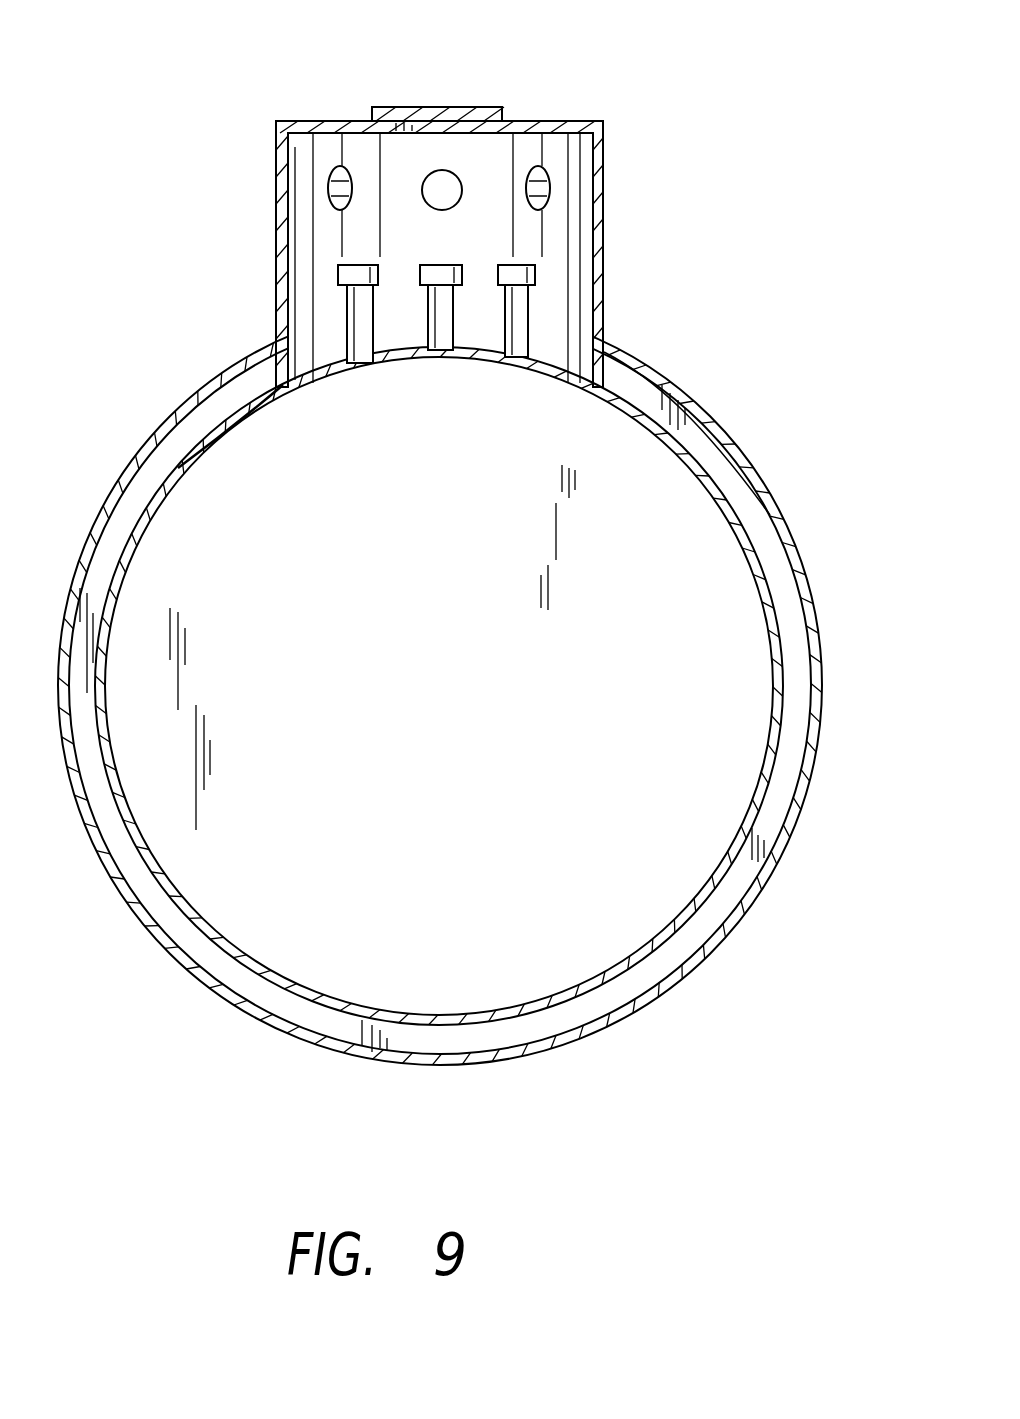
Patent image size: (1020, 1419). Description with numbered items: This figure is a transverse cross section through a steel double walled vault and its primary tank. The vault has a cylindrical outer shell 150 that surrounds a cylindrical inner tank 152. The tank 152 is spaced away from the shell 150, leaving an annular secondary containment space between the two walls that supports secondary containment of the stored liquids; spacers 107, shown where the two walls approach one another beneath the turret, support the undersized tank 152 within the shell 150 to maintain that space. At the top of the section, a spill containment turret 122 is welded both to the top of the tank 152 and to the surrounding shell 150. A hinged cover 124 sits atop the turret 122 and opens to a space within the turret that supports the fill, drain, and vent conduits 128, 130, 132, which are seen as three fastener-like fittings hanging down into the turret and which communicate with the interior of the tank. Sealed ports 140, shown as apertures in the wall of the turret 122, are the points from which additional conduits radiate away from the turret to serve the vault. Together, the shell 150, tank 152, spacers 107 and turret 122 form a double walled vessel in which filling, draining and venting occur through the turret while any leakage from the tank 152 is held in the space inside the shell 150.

The spacers 107 is at (277, 370).
The spill containment turret 122 is at (625, 121).
The hinged cover 124 is at (450, 108).
The fill conduit 128 is at (350, 302).
The drain conduit 130 is at (437, 318).
The vent conduit 132 is at (520, 295).
The sealed ports 140 is at (423, 190).
The cylindrical outer shell 150 is at (724, 430).
The cylindrical inner tank 152 is at (747, 525).